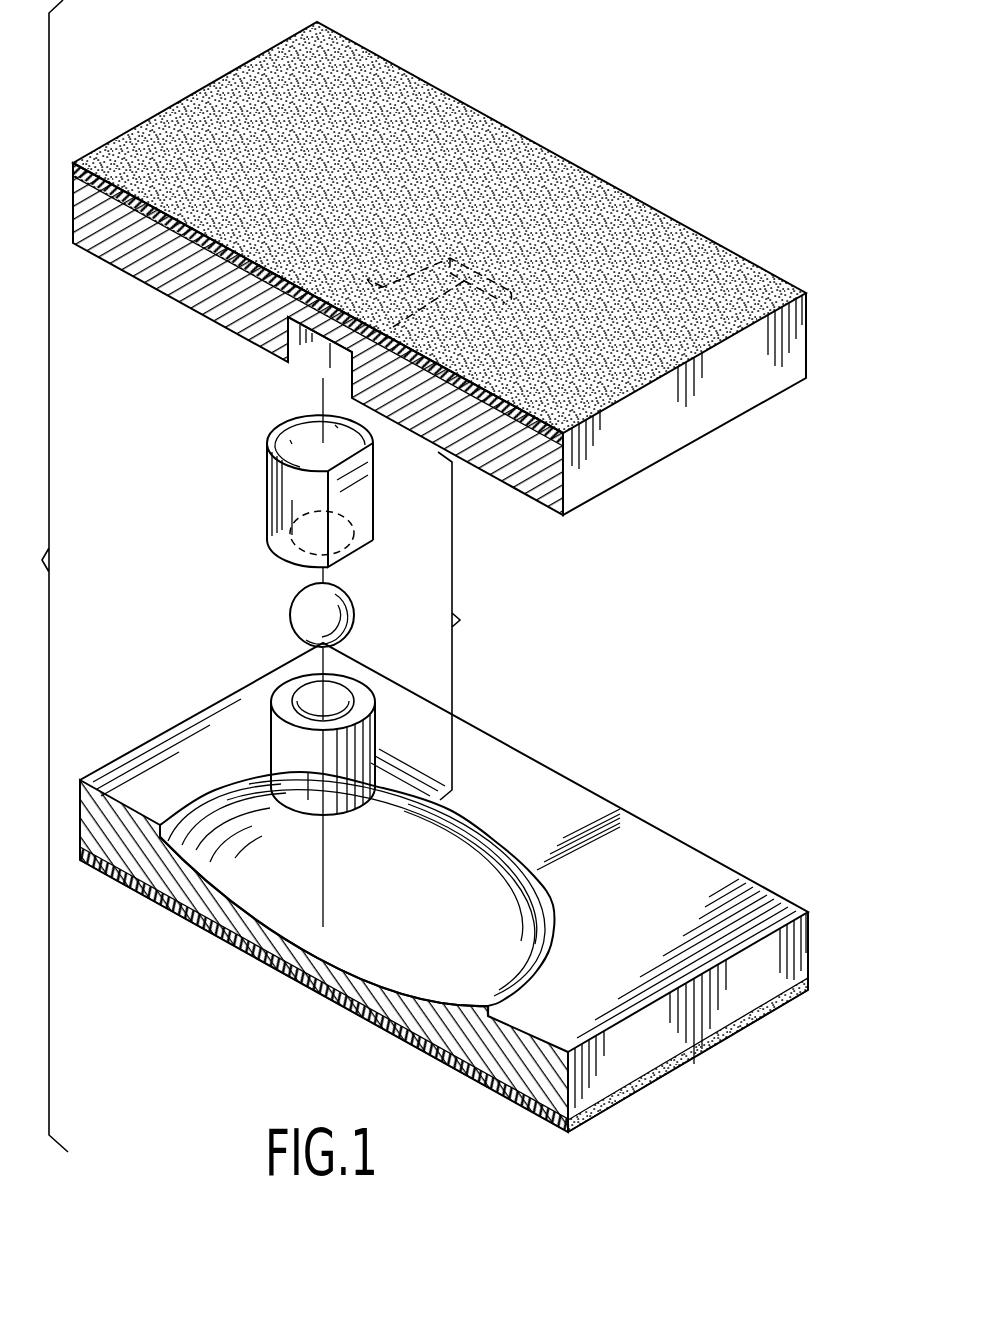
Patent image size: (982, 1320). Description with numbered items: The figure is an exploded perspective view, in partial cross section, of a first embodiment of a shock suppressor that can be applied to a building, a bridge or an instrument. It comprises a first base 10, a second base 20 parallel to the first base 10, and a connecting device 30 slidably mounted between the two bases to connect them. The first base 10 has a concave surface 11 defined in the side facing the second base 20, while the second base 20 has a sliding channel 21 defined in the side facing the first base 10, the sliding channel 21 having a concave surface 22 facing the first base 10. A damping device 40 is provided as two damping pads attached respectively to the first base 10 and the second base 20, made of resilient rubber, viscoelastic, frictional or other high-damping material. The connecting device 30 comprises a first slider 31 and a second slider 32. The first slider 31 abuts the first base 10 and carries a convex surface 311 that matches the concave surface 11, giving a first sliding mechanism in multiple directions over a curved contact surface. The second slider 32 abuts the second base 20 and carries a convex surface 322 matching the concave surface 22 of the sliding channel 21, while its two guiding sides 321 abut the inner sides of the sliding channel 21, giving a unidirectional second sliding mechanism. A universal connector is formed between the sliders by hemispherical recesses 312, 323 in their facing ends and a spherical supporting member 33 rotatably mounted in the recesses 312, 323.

The first base 10 is at (612, 797).
The concave surface 11 is at (500, 968).
The second base 20 is at (690, 446).
The sliding channel 21 is at (290, 353).
The concave surface 22 is at (367, 279).
The connecting device 30 is at (413, 652).
The first slider 31 is at (278, 740).
The convex surface 311 is at (347, 813).
The recess 312 is at (305, 690).
The second slider 32 is at (267, 495).
The guiding sides 321 is at (357, 490).
The convex surface 322 is at (293, 437).
The recess 323 is at (300, 549).
The supporting member 33 is at (340, 617).
The damping device 40 is at (537, 141).